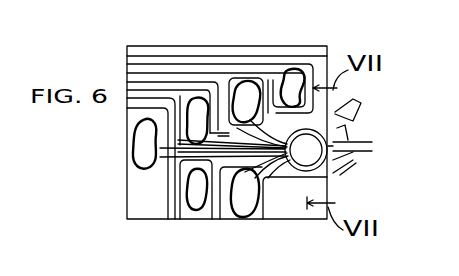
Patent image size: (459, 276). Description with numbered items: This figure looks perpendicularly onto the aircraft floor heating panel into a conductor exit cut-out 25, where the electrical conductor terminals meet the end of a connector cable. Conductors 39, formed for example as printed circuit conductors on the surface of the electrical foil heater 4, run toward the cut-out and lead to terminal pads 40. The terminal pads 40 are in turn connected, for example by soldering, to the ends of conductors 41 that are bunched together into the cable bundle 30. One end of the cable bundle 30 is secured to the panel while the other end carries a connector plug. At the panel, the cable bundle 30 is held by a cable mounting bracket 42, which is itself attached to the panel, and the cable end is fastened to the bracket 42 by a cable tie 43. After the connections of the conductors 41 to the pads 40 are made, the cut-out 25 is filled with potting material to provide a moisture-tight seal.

The electrical foil heater 4 is at (150, 207).
The cut-out 25 is at (319, 46).
The cable bundle 30 is at (309, 142).
The conductors 39 is at (181, 64).
The terminal pads 40 is at (248, 208).
The conductors 41 is at (283, 178).
The cable mounting bracket 42 is at (375, 143).
The cable tie 43 is at (347, 117).